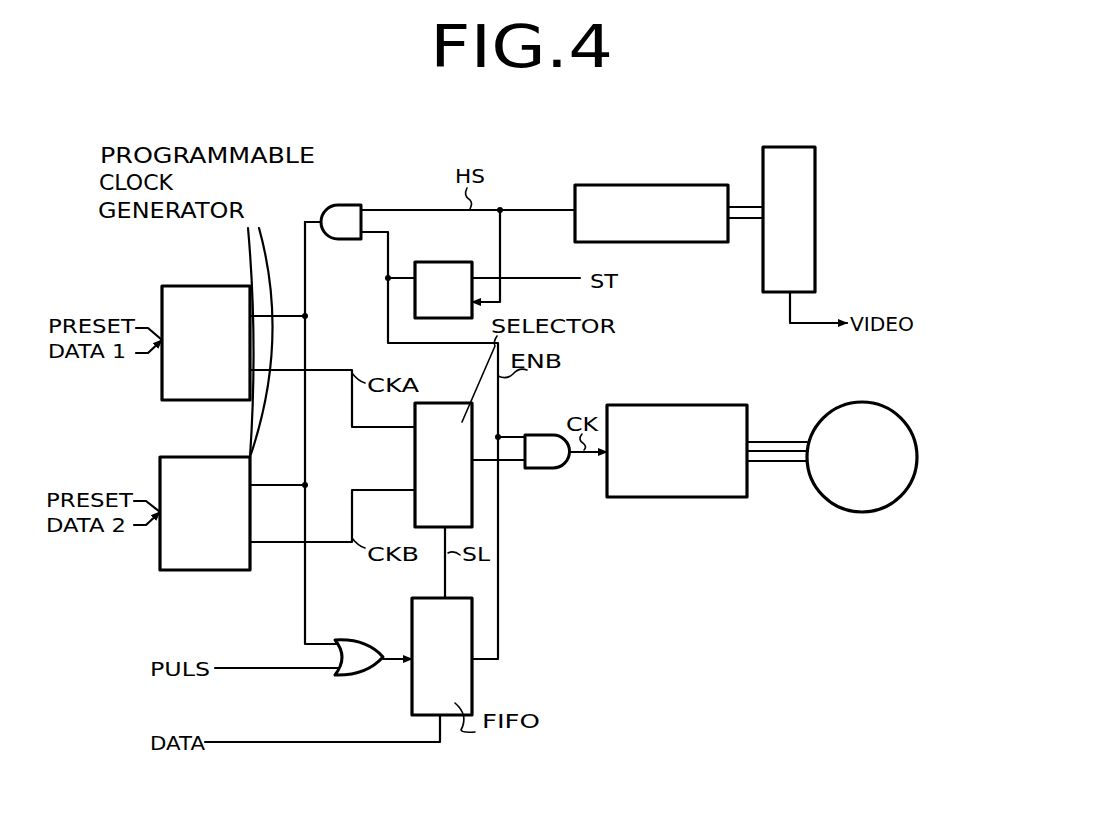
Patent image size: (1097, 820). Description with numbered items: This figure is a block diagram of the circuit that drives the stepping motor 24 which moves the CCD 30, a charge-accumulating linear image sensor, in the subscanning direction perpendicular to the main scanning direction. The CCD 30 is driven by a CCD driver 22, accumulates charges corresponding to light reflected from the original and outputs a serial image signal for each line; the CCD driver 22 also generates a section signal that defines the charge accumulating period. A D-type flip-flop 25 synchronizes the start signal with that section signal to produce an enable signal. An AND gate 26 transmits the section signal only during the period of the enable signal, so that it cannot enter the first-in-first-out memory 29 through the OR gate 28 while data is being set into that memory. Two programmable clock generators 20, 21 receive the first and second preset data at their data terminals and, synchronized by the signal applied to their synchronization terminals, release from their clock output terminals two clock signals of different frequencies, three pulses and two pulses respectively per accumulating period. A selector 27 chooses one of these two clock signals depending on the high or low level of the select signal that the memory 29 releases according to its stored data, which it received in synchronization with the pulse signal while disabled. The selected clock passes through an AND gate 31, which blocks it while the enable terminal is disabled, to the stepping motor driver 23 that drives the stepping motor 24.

The programmable clock generator 20 is at (208, 286).
The programmable clock generator 21 is at (201, 457).
The CCD driver 22 is at (631, 184).
The stepping motor driver 23 is at (668, 405).
The stepping motor 24 is at (842, 403).
The D-type flip-flop 25 is at (439, 262).
The AND gate 26 is at (338, 205).
The selector 27 is at (457, 403).
The OR gate 28 is at (357, 640).
The first-in-first-out memory 29 is at (473, 688).
The CCD 30 is at (777, 146).
The AND gate 31 is at (539, 435).